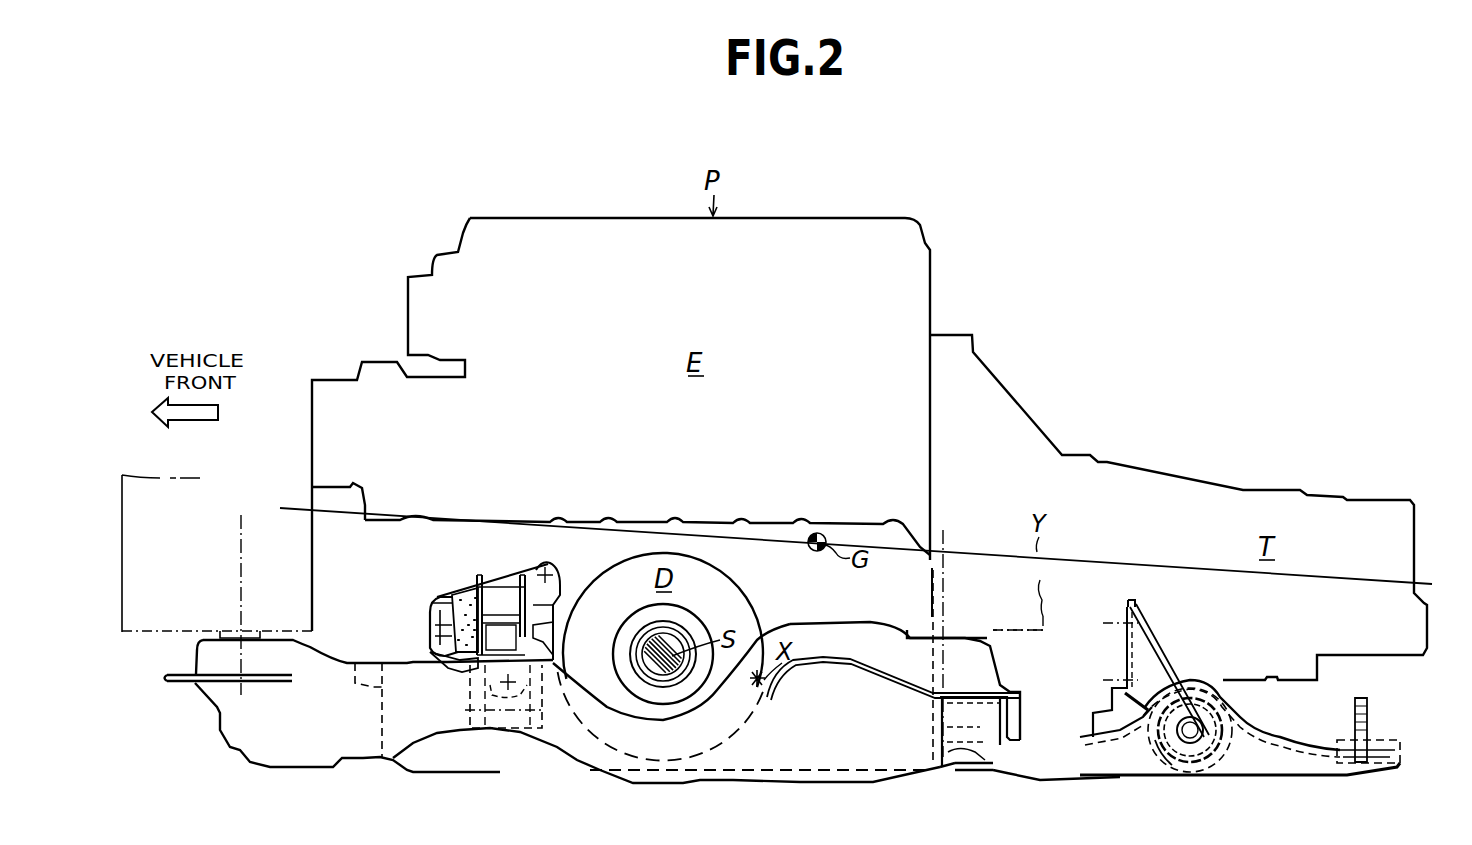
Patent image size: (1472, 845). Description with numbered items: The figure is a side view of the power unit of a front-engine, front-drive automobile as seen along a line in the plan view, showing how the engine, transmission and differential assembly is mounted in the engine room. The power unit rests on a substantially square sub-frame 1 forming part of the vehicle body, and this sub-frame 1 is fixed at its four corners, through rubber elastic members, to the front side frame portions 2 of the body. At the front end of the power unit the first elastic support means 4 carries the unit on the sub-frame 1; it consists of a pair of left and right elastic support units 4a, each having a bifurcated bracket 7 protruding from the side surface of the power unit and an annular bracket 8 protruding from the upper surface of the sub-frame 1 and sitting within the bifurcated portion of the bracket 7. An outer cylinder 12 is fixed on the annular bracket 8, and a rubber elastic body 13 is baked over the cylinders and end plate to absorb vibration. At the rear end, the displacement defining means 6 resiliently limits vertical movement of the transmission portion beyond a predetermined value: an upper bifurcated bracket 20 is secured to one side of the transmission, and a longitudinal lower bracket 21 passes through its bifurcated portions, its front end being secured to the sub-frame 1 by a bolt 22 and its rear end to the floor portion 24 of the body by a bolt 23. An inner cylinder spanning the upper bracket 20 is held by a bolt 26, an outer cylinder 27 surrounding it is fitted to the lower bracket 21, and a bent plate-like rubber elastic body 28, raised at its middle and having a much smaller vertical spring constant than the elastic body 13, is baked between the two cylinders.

The sub-frame 1 is at (365, 752).
The front side frame portions 2 is at (122, 540).
The first elastic support means 4 is at (489, 545).
The elastic support unit 4a is at (421, 602).
The displacement defining means 6 is at (1234, 661).
The bifurcated bracket 7 is at (550, 571).
The annular bracket 8 is at (477, 665).
The outer cylinder 12 is at (505, 585).
The elastic body 13 is at (470, 598).
The upper bifurcated bracket 20 is at (1153, 647).
The lower bracket 21 is at (1292, 770).
The bolt 22 is at (990, 775).
The bolt 23 is at (1370, 708).
The floor portion 24 is at (1408, 755).
The bolt 26 is at (1227, 750).
The outer cylinder 27 is at (1156, 743).
The bent plate-like elastic body 28 is at (1157, 760).